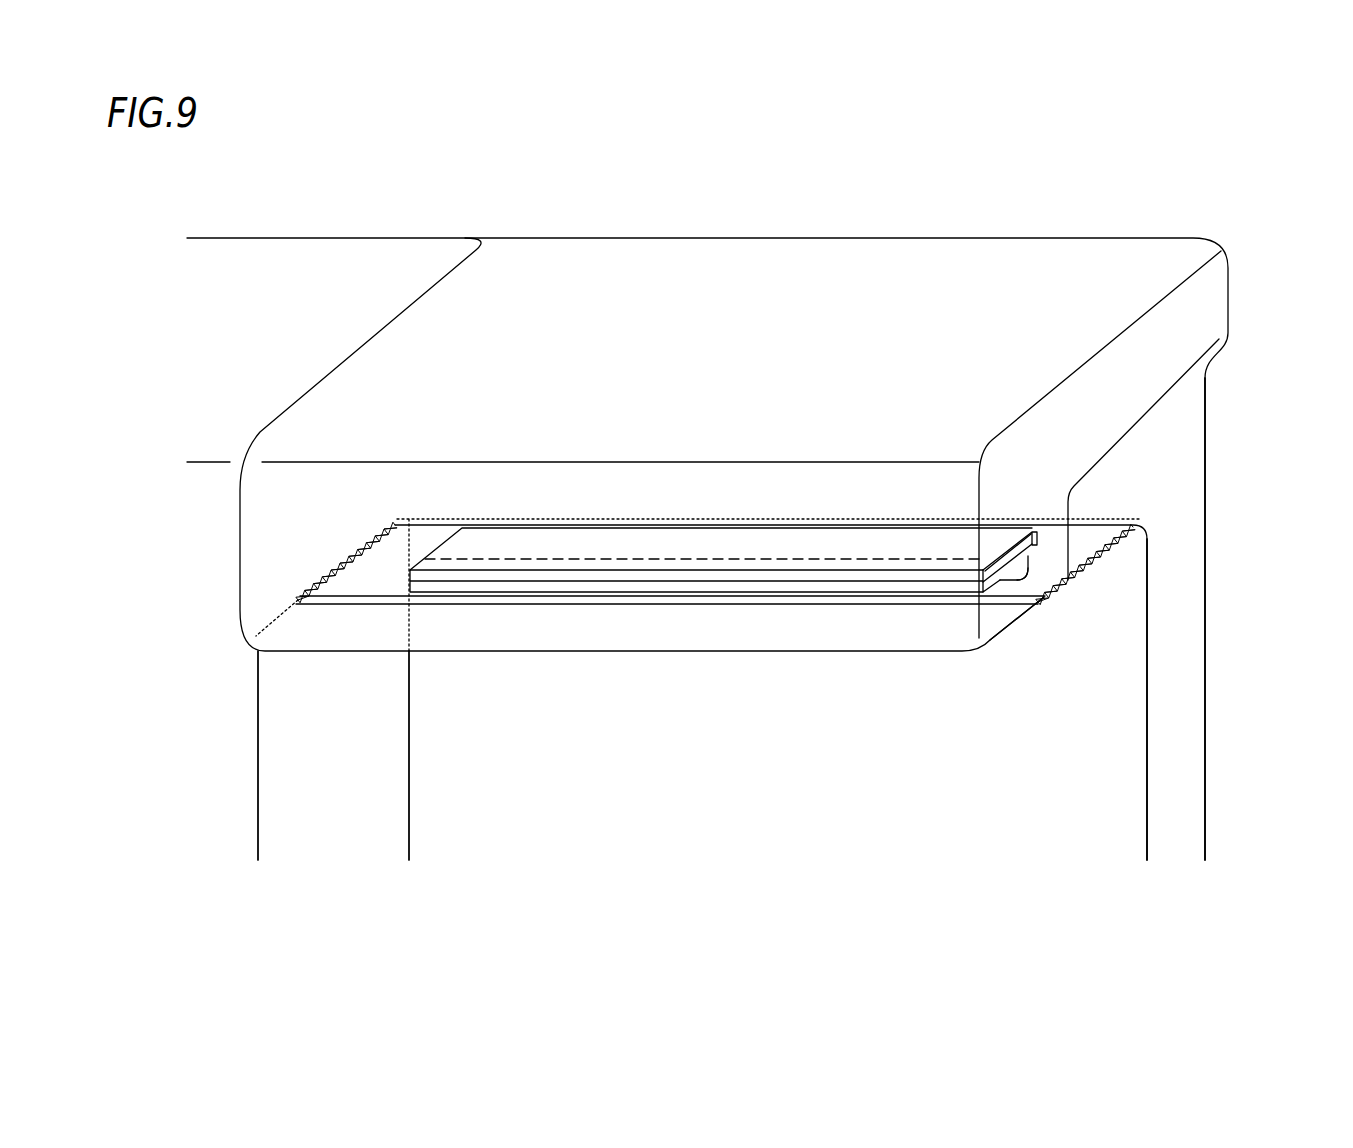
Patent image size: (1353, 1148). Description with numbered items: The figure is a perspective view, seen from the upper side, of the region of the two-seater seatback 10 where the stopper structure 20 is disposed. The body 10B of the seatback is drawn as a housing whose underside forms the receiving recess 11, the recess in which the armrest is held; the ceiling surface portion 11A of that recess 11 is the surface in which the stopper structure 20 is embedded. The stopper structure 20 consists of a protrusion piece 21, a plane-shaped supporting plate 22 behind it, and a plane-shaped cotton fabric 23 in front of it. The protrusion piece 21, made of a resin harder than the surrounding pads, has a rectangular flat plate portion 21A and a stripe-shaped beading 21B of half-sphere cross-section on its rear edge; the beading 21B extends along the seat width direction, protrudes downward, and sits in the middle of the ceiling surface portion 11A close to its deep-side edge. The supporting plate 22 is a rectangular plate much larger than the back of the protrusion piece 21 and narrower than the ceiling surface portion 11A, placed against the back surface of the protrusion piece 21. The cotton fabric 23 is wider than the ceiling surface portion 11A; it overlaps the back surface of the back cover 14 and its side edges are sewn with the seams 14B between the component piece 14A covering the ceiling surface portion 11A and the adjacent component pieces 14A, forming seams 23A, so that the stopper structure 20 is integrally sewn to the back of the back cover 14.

The two-seater seatback 10 is at (707, 524).
The two-seater seatback body 10B is at (947, 276).
The receiving recess 11 is at (1122, 619).
The ceiling surface portion 11A is at (1017, 651).
The back cover 14 is at (770, 618).
The component piece 14A is at (1038, 377).
The seam 14B is at (338, 590).
The stopper structure 20 is at (766, 589).
The protrusion piece 21 is at (1048, 586).
The flat plate portion 21A is at (1000, 565).
The beading 21B is at (1069, 599).
The supporting plate 22 is at (788, 550).
The cotton fabric 23 is at (721, 522).
The seam 23A is at (539, 560).